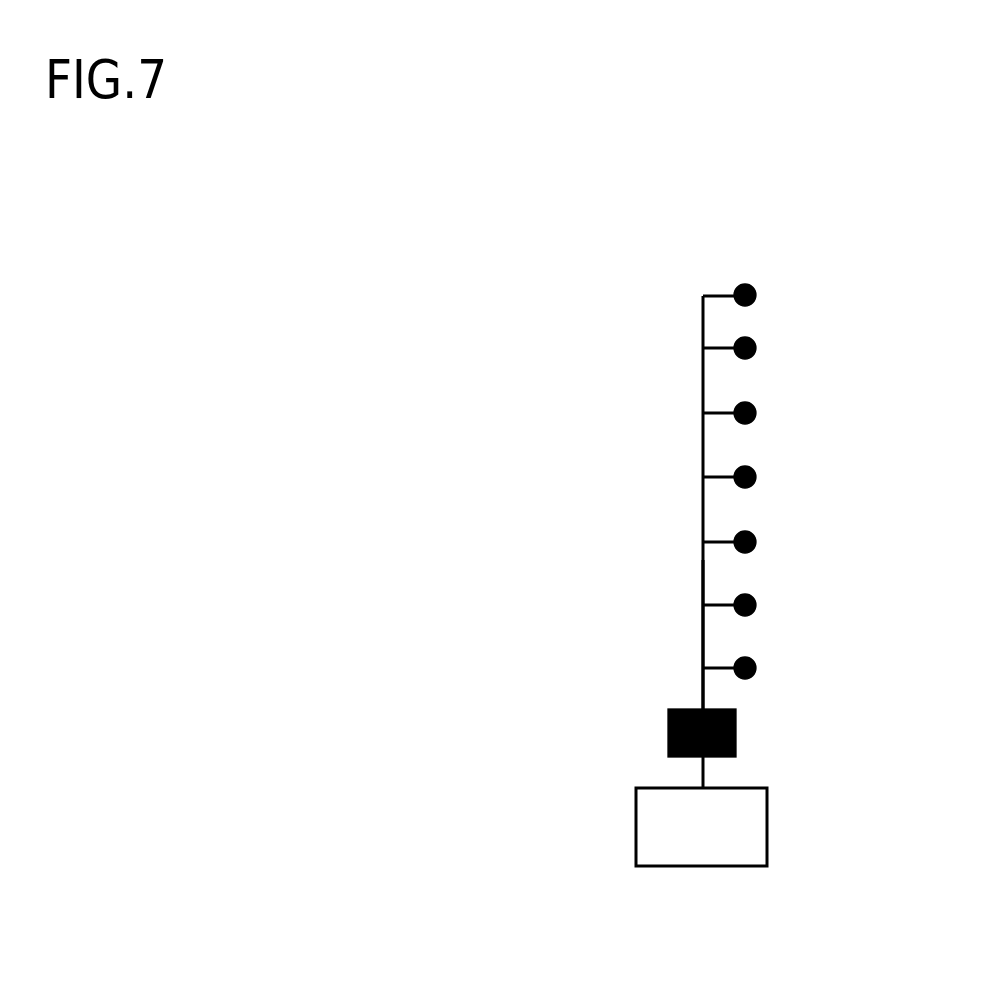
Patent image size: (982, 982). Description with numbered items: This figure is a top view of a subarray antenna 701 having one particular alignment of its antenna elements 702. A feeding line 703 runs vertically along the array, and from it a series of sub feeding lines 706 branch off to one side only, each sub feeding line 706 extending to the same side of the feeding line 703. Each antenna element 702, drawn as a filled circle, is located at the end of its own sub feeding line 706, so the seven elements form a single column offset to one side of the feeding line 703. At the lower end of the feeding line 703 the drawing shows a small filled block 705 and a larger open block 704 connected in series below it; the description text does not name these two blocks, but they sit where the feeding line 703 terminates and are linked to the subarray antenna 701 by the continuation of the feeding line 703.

The subarray antenna 701 is at (836, 496).
The antenna element 702 is at (800, 345).
The feeding line 703 is at (705, 640).
The transceiver unit 704 is at (767, 807).
The signal processing unit 705 is at (667, 734).
The sub feeding line 706 is at (719, 348).